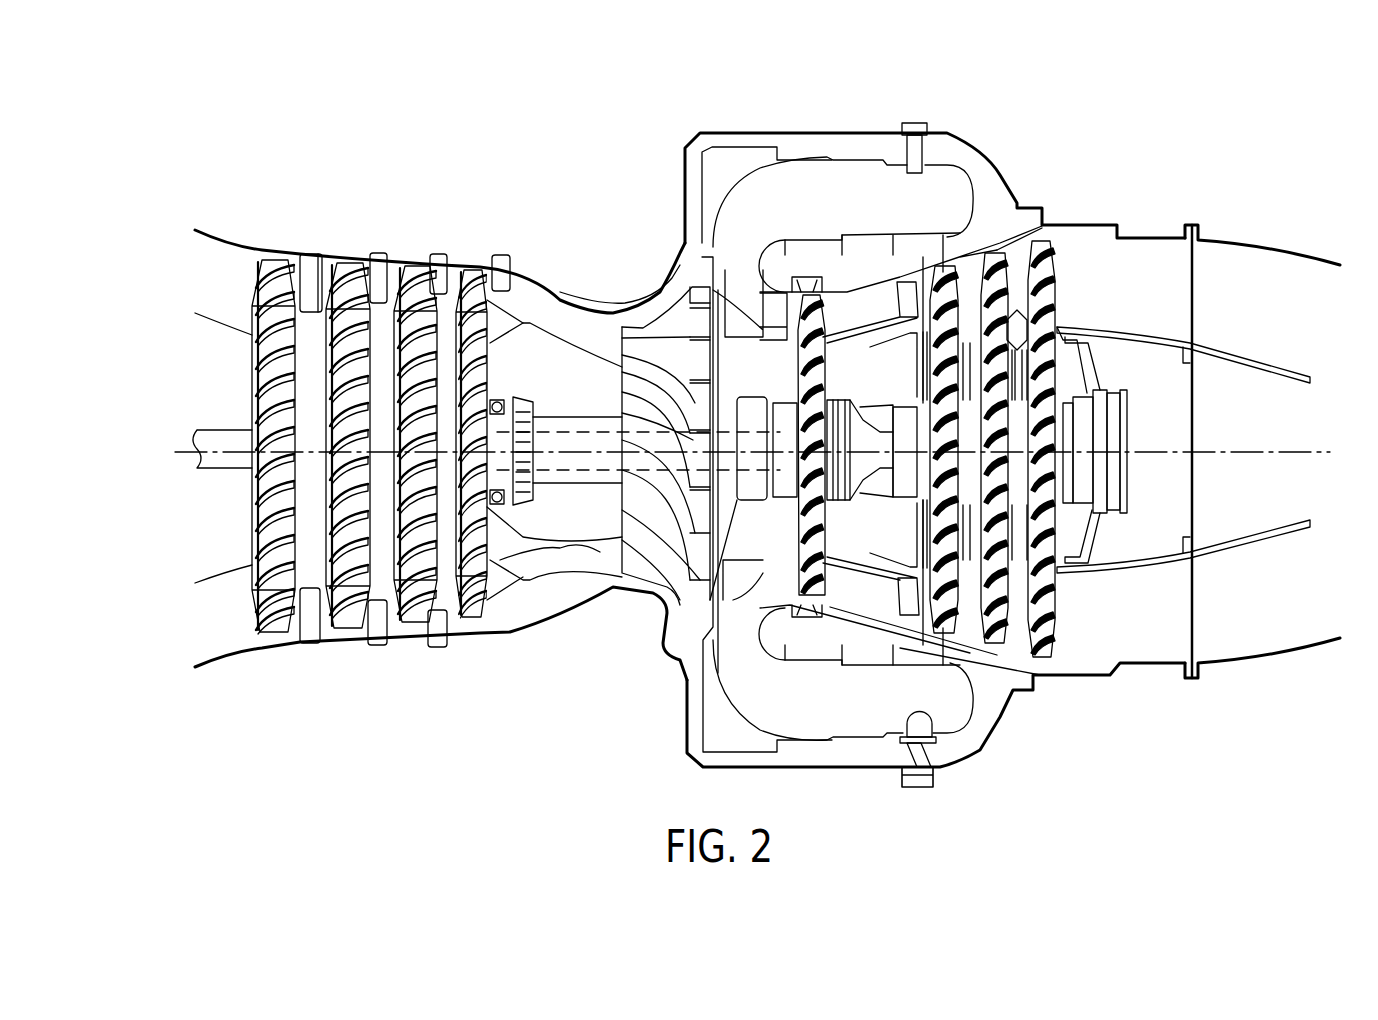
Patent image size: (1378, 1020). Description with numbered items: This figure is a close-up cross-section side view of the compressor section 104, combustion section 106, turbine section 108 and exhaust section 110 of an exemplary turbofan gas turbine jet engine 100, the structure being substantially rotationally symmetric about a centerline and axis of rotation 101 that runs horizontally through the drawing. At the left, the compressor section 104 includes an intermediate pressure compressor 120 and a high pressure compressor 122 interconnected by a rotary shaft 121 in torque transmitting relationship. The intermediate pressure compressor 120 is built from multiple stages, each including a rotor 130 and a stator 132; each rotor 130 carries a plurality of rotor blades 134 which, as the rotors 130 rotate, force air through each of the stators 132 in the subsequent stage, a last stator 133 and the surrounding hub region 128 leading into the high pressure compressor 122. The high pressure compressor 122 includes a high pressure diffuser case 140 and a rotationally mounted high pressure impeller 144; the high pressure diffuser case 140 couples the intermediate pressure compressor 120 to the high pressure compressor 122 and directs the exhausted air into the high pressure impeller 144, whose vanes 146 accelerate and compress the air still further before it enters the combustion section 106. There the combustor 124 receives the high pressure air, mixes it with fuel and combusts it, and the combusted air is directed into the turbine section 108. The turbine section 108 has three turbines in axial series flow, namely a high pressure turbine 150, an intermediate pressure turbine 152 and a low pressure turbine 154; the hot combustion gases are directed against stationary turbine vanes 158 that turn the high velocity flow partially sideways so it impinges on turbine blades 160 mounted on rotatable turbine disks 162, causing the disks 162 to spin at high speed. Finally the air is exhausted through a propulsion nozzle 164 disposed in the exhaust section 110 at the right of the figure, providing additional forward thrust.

The turbofan gas turbine jet engine 100 is at (1297, 700).
The centerline and axis of rotation 101 is at (1278, 458).
The compressor section 104 is at (678, 108).
The combustion section 106 is at (683, 108).
The turbine section 108 is at (912, 108).
The exhaust section 110 is at (1193, 108).
The intermediate pressure compressor 120 is at (245, 682).
The rotary shaft 121 is at (222, 474).
The high pressure compressor 122 is at (712, 682).
The combustor 124 is at (810, 740).
The compressor hub 128 is at (549, 364).
The rotor 130 is at (270, 258).
The stator 132 is at (305, 648).
The last stator vane 133 is at (506, 256).
The rotor blades 134 is at (465, 290).
The high pressure diffuser case 140 is at (557, 588).
The high pressure impeller 144 is at (660, 590).
The vanes 146 is at (650, 330).
The high pressure turbine 150 is at (935, 645).
The intermediate pressure turbine 152 is at (992, 645).
The low pressure turbine 154 is at (1042, 243).
The stationary turbine vanes 158 is at (975, 250).
The turbine blades 160 is at (1052, 288).
The rotatable turbine disks 162 is at (835, 387).
The propulsion nozzle 164 is at (1250, 377).